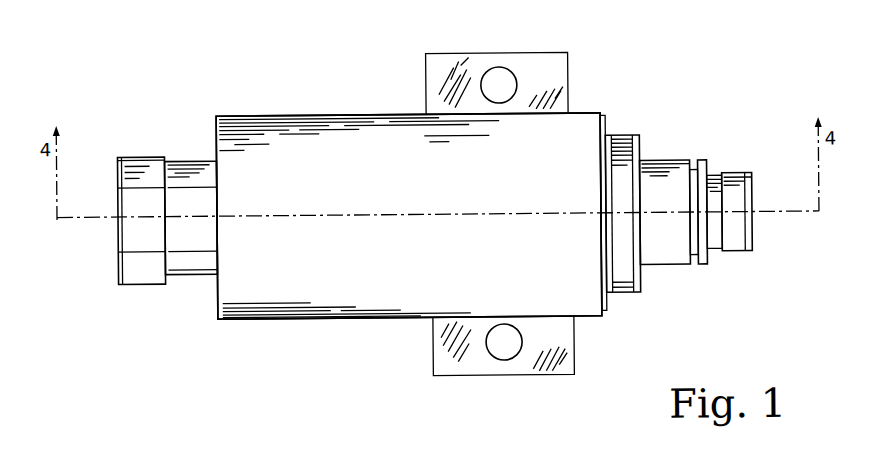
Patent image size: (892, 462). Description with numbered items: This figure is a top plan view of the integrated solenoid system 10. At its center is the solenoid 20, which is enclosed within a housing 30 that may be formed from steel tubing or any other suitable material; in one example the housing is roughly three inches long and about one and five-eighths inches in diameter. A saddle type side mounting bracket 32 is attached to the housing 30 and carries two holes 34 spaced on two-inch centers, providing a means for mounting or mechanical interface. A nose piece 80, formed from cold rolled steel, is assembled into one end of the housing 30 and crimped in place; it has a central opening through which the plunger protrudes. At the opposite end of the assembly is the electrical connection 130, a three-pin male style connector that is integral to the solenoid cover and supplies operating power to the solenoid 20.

The integrated solenoid system 10 is at (373, 168).
The solenoid 20 is at (582, 144).
The housing 30 is at (347, 318).
The saddle type side mounting bracket 32 is at (513, 378).
The holes 34 is at (487, 349).
The nose piece 80 is at (616, 294).
The electrical connection 130 is at (152, 284).